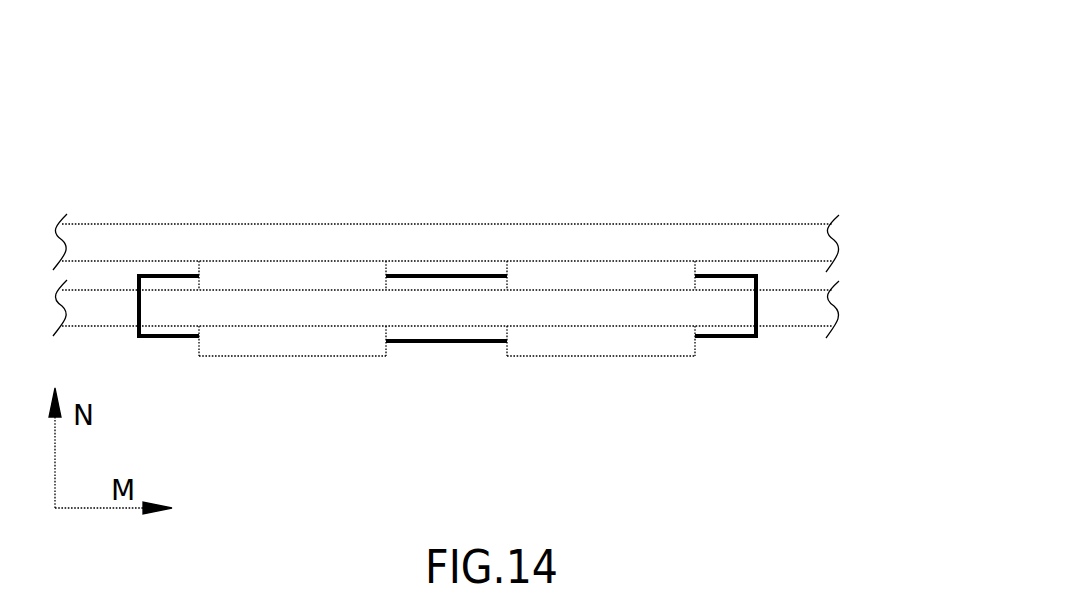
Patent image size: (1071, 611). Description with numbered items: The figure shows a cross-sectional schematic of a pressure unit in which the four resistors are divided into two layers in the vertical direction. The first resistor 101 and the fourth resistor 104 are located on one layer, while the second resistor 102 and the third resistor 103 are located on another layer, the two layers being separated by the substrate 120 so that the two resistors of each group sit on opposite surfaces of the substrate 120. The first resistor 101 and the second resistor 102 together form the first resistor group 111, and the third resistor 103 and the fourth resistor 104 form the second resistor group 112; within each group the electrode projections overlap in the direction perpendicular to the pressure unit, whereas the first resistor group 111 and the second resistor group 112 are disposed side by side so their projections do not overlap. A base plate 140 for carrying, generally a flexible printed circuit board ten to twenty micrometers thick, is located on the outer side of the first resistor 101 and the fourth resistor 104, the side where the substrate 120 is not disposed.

The first resistor 101 is at (253, 270).
The second resistor 102 is at (328, 343).
The third resistor 103 is at (636, 343).
The fourth resistor 104 is at (558, 270).
The first resistor group 111 is at (292, 224).
The second resistor group 112 is at (601, 224).
The substrate 120 is at (816, 310).
The base plate 140 is at (816, 245).